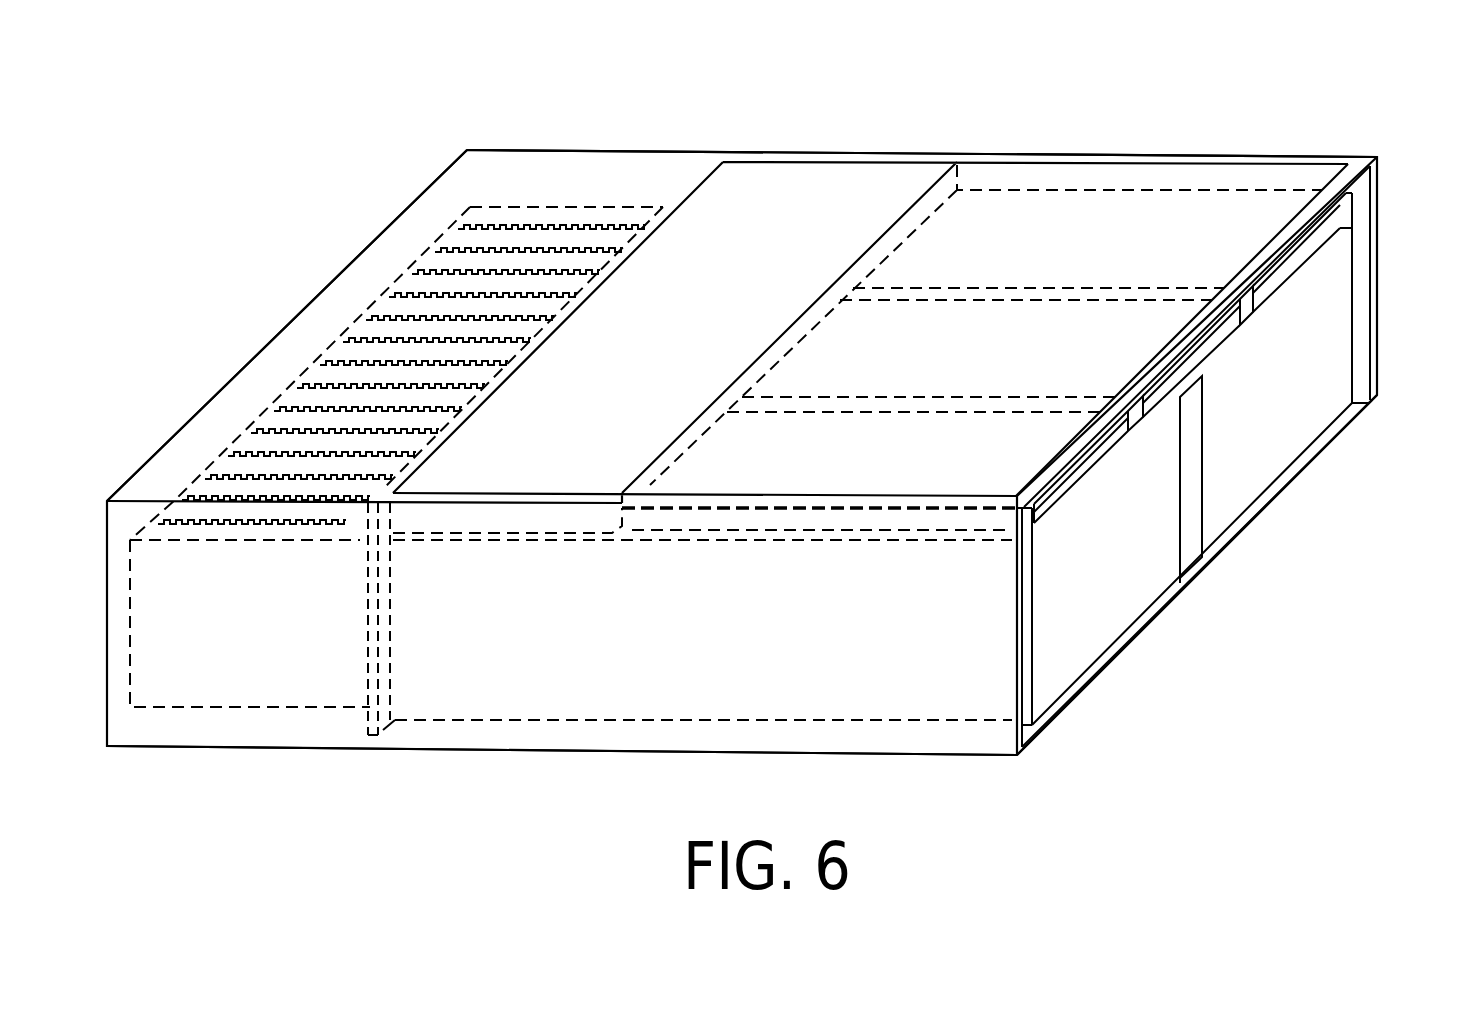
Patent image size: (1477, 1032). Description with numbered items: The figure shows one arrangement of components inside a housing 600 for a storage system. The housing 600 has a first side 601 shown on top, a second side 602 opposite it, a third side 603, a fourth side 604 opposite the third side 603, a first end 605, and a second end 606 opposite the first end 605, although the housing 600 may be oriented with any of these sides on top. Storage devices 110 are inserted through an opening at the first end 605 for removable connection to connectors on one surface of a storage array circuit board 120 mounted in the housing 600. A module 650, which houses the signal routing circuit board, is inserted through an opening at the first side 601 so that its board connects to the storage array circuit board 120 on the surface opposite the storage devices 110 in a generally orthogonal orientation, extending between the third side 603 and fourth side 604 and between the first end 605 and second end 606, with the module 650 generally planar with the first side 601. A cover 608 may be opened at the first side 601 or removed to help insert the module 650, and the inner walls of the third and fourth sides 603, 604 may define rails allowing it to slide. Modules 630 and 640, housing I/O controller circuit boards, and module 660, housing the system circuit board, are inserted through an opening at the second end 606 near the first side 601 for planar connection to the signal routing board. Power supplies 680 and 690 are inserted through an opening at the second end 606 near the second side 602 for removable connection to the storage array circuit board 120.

The storage devices 110 is at (606, 178).
The storage array circuit board 120 is at (370, 727).
The housing 600 is at (233, 378).
The first side 601 is at (727, 212).
The second side 602 is at (976, 837).
The third side 603 is at (1332, 118).
The fourth side 604 is at (548, 704).
The first end 605 is at (200, 289).
The second end 606 is at (1376, 458).
The cover 608 is at (1155, 175).
The module 630 is at (1328, 228).
The module 640 is at (1057, 495).
The module 650 is at (780, 177).
The module 660 is at (1220, 335).
The power supply 680 is at (1292, 450).
The power supply 690 is at (1107, 637).